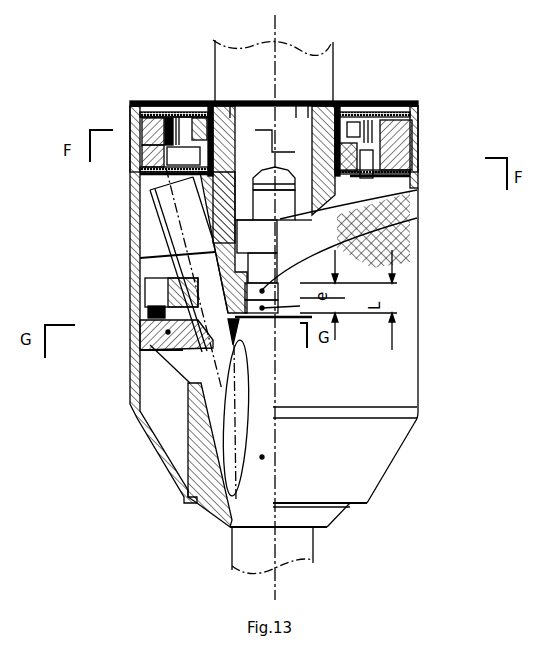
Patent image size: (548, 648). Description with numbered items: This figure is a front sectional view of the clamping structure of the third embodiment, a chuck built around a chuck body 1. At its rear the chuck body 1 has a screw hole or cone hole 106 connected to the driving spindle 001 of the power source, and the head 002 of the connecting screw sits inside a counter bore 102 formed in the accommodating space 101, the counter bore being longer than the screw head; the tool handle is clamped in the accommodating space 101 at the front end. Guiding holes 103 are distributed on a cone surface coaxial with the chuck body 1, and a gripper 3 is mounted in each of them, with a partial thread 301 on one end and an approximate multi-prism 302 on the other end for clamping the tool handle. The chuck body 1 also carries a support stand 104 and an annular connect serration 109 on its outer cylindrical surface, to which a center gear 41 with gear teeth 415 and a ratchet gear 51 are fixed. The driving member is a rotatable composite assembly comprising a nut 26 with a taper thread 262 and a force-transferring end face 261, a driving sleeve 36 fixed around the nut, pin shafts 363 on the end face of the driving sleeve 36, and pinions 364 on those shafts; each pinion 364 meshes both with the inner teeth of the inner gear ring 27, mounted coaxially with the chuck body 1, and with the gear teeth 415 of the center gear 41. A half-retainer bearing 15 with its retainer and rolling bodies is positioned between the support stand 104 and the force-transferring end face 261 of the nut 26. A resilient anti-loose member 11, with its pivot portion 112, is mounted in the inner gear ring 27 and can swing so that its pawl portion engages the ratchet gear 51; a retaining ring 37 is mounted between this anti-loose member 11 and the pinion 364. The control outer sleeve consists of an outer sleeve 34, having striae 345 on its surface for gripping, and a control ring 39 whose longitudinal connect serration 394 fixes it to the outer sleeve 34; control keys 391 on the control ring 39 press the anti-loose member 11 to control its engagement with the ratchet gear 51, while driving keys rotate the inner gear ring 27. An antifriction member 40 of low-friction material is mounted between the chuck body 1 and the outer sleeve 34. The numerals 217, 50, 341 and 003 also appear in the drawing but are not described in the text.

The driving spindle 001 is at (300, 70).
The chuck body 1 is at (221, 112).
The screw hole or cone hole 106 is at (298, 143).
The resilient anti-loose member 11 is at (131, 105).
The pivot portion 112 is at (131, 112).
The housing portion 217 is at (128, 142).
The inner gear ring 27 is at (143, 150).
The bearing 50 is at (187, 104).
The control key 391 is at (167, 104).
The support plate 341 is at (163, 106).
The retaining ring 37 is at (140, 162).
The center gear 41 is at (142, 176).
The gear teeth 415 is at (133, 179).
The control ring 39 is at (416, 102).
The ratchet gear 51 is at (364, 109).
The connect serration 394 is at (418, 118).
The pin shaft 363 is at (417, 135).
The connect serration 109 is at (418, 146).
The pinion 364 is at (418, 169).
The driving sleeve 36 is at (133, 268).
The head of the screw 002 is at (415, 216).
The striae 345 is at (375, 237).
The counter bore 102 is at (300, 317).
The gripper 3 is at (187, 223).
The partial thread 301 is at (167, 243).
The guiding hole 103 is at (185, 267).
The support stand 104 is at (160, 292).
The half-retainer bearing 15 is at (145, 313).
The force-transferring end face 261 is at (145, 327).
The antifriction member 40 is at (168, 332).
The nut 26 is at (150, 347).
The taper thread 262 is at (152, 385).
The outer sleeve 34 is at (143, 407).
The approximate multi-prism 302 is at (162, 457).
The accommodating space 101 is at (262, 457).
The output shaft 003 is at (292, 550).